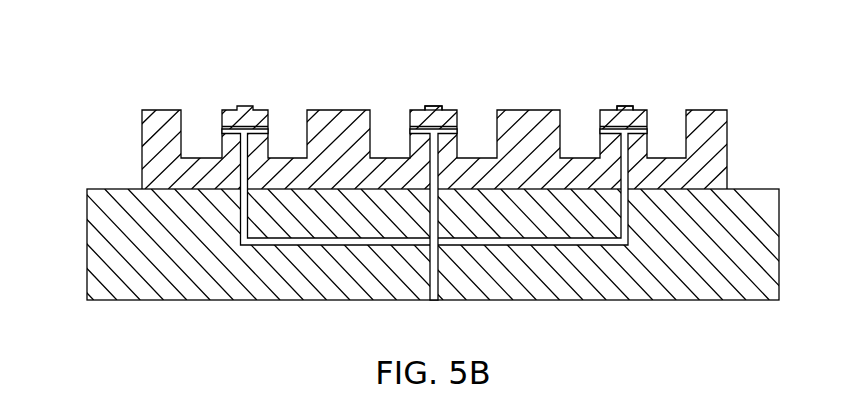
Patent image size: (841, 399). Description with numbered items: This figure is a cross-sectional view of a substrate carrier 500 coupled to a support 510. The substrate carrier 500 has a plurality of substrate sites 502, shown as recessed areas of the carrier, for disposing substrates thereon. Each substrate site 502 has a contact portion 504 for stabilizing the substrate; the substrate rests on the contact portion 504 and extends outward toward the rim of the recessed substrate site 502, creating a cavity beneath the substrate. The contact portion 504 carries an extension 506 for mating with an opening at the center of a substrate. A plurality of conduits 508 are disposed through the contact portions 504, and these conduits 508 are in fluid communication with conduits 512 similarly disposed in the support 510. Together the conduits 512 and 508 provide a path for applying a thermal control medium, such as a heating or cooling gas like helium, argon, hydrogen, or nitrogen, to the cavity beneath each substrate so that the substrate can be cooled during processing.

The substrate carrier 500 is at (419, 187).
The substrate site 502 is at (667, 120).
The contact portion 504 is at (623, 108).
The extension 506 is at (435, 108).
The conduit 508 is at (409, 130).
The support 510 is at (85, 253).
The conduit 512 is at (283, 246).